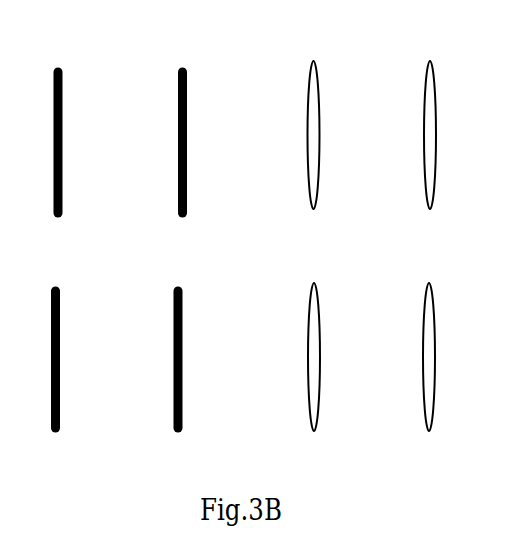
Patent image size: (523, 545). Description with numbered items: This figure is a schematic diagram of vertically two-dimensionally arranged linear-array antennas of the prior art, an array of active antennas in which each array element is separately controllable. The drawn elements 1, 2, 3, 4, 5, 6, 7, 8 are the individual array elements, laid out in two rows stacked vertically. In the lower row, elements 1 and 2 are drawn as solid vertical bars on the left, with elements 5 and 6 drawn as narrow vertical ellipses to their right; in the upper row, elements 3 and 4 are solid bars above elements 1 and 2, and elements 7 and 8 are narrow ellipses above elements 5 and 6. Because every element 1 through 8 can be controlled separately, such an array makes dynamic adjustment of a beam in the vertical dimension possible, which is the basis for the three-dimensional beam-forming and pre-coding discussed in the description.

The first filled bar pattern 1 is at (55, 380).
The second filled bar pattern 2 is at (178, 380).
The third filled bar pattern 3 is at (57, 161).
The fourth filled bar pattern 4 is at (182, 161).
The first elliptical outline pattern 5 is at (314, 375).
The second elliptical outline pattern 6 is at (429, 375).
The third elliptical outline pattern 7 is at (313, 153).
The fourth elliptical outline pattern 8 is at (430, 153).